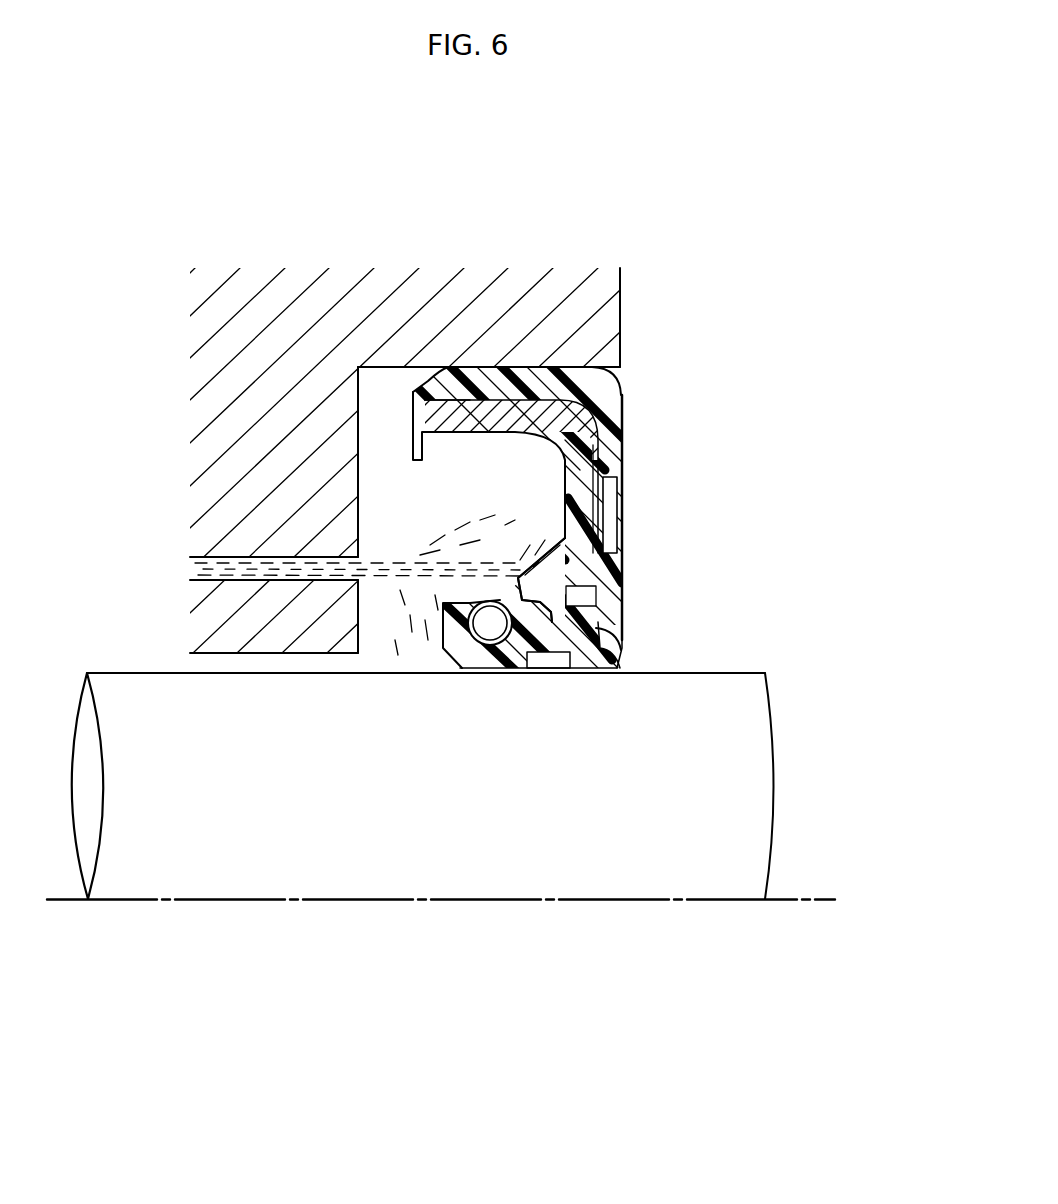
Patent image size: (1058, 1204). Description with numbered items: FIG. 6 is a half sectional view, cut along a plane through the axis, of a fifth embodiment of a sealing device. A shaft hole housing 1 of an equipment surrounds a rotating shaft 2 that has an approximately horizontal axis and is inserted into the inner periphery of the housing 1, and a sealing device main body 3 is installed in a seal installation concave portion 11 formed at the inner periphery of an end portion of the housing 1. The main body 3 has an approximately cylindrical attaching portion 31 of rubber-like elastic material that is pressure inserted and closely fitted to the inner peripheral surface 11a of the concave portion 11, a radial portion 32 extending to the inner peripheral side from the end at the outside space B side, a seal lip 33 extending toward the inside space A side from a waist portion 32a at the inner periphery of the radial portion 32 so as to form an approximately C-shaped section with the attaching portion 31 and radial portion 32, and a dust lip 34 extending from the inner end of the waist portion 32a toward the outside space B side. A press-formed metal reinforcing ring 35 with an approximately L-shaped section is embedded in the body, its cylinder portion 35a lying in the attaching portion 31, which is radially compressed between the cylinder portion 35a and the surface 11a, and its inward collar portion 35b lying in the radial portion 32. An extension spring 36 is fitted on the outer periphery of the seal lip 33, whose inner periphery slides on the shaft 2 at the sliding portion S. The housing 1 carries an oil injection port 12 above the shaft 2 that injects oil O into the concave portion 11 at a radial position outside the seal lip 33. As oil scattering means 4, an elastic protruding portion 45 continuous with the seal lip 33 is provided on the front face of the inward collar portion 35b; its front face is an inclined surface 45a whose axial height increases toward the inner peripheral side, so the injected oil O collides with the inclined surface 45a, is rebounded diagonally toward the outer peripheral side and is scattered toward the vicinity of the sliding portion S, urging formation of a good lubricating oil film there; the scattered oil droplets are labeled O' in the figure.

The shaft hole housing 1 is at (253, 285).
The seal installation concave portion 11 is at (392, 422).
The inner peripheral surface 11a is at (620, 390).
The oil injection port 12 is at (360, 557).
The rotating shaft 2 is at (220, 860).
The sealing device main body 3 is at (609, 489).
The attaching portion 31 is at (488, 377).
The radial portion 32 is at (623, 453).
The waist portion 32a is at (600, 627).
The seal lip 33 is at (465, 652).
The dust lip 34 is at (603, 673).
The reinforcing ring 35 is at (590, 512).
The cylinder portion 35a is at (513, 395).
The inward collar portion 35b is at (587, 537).
The extension spring 36 is at (508, 642).
The oil scattering means 4 is at (520, 578).
The elastic protruding portion 45 is at (520, 578).
The inclined surface 45a is at (522, 545).
The inside space A is at (130, 660).
The outside space B is at (914, 495).
The oil O is at (381, 615).
The oil droplet O' is at (379, 688).
The sliding portion S is at (483, 678).